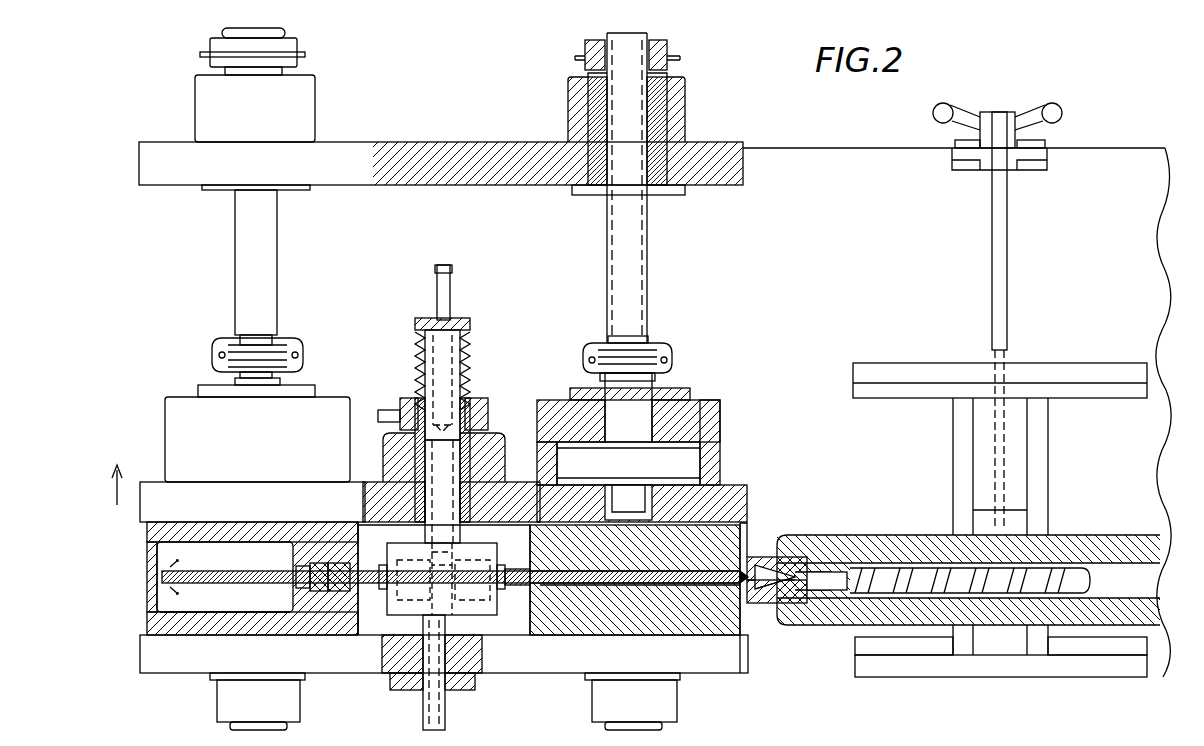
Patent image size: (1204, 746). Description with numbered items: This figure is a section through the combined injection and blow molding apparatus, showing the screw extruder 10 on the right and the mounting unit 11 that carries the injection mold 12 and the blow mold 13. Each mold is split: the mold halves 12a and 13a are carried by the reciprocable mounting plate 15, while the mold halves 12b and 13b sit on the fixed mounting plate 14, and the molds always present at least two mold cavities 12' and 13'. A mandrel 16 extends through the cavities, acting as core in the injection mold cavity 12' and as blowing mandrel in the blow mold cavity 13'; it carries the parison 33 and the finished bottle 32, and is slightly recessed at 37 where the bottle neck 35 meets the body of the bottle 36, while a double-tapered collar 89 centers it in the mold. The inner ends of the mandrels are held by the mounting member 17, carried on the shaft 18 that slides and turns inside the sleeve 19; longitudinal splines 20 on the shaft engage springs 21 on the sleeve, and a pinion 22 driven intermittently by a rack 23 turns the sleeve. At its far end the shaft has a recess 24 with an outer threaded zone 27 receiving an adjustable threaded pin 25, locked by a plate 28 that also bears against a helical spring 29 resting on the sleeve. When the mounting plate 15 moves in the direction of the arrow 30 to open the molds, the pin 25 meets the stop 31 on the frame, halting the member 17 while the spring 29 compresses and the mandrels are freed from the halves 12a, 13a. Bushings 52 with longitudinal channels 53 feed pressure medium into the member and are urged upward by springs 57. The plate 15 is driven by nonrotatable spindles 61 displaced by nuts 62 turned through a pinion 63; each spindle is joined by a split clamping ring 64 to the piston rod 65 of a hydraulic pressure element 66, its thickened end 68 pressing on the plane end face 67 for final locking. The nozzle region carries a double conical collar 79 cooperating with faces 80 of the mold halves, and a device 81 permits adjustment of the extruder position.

The screw extruder 10 is at (888, 535).
The mounting unit 11 is at (748, 462).
The injection mold 12 is at (657, 556).
The injection mold half 12a is at (749, 545).
The injection mold half 12b is at (712, 620).
The injection mold cavity 12' is at (562, 645).
The blow mold 13 is at (226, 578).
The blow mold half 13a is at (152, 530).
The blow mold half 13b is at (152, 628).
The blow mold cavity 13' is at (127, 577).
The fixed mounting plate 14 is at (166, 673).
The reciprocable mounting plate 15 is at (152, 482).
The mandrel 16 is at (230, 571).
The mounting member 17 is at (488, 547).
The shaft 18 is at (506, 460).
The sleeve 19 is at (492, 500).
The longitudinal grooves or splines 20 is at (432, 520).
The springs 21 is at (425, 443).
The pinion 22 is at (482, 408).
The rack 23 is at (388, 408).
The recess 24 is at (452, 350).
The adjustable threaded pin 25 is at (450, 292).
The outer threaded zone 27 is at (460, 336).
The plate 28 is at (455, 320).
The helical spring 29 is at (418, 362).
The arrow 30 is at (112, 500).
The stop 31 is at (491, 141).
The finished bottles 32 is at (233, 606).
The parisons 33 is at (650, 598).
The bottle neck 35 is at (335, 555).
The body of the bottle 36 is at (305, 548).
The recess 37 is at (300, 572).
The bushing 52 is at (445, 710).
The longitudinal channels 53 is at (420, 700).
The spring 57 is at (470, 660).
The nonrotatable spindle 61 is at (278, 251).
The nut 62 is at (665, 116).
The pinion 63 is at (298, 50).
The split clamping ring 64 is at (300, 348).
The piston rod 65 is at (690, 395).
The hydraulic pressure element 66 is at (722, 440).
The end face 67 is at (656, 370).
The thickened end 68 is at (612, 336).
The double conical collar 79 is at (765, 550).
The faces 80 is at (750, 605).
The adjustment device 81 is at (1040, 455).
The double-tapered collar 89 is at (504, 590).